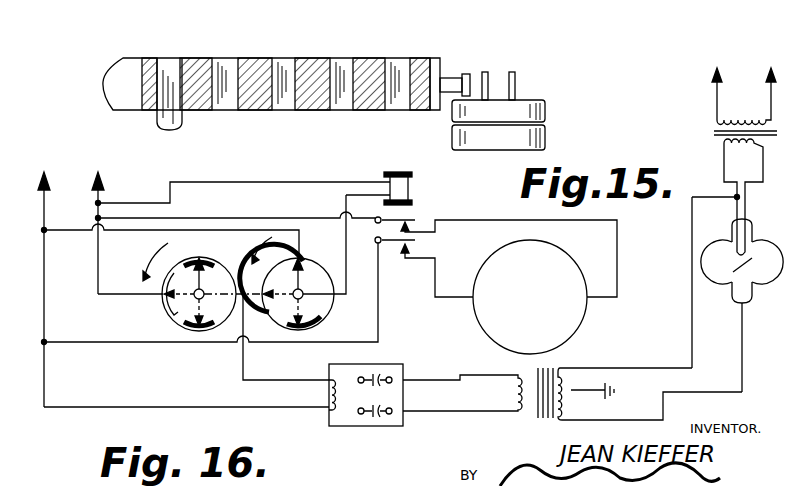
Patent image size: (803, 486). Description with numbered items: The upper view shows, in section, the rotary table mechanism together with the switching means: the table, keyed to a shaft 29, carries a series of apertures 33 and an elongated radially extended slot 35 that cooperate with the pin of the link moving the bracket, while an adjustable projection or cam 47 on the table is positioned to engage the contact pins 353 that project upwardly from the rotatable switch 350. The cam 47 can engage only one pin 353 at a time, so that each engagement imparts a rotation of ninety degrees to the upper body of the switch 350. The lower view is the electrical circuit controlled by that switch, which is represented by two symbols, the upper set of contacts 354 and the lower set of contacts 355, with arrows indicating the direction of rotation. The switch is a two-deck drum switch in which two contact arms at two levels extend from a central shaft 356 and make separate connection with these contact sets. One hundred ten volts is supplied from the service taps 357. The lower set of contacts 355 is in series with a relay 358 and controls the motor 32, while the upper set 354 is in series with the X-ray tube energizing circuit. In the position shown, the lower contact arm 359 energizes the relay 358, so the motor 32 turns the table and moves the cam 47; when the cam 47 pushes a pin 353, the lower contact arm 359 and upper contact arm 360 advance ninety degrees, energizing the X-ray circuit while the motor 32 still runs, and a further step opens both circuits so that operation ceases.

In FIG. 15, the radially extended slot 35 is at (132, 68).
In FIG. 15, the shaft 29 is at (168, 72).
In FIG. 15, the apertures 33 is at (232, 58).
In FIG. 15, the cam 47 is at (447, 77).
In FIG. 15, the contact pins 353 is at (515, 72).
In FIG. 15, the rotatable switch 350 is at (545, 120).
In FIG. 16, the service taps 357 is at (47, 172).
In FIG. 16, the relay 358 is at (410, 188).
In FIG. 16, the motor 32 is at (530, 297).
In FIG. 16, the upper set of contacts 354 is at (168, 320).
In FIG. 16, the lower set of contacts 355 is at (325, 316).
In FIG. 16, the central shaft 356 is at (203, 290).
In FIG. 16, the lower contact arm 359 is at (305, 284).
In FIG. 16, the upper contact arm 360 is at (196, 276).